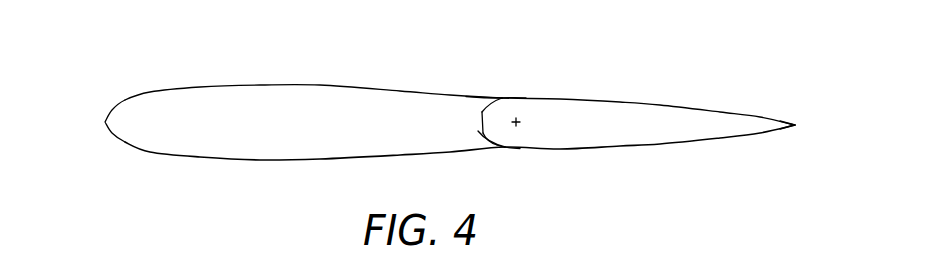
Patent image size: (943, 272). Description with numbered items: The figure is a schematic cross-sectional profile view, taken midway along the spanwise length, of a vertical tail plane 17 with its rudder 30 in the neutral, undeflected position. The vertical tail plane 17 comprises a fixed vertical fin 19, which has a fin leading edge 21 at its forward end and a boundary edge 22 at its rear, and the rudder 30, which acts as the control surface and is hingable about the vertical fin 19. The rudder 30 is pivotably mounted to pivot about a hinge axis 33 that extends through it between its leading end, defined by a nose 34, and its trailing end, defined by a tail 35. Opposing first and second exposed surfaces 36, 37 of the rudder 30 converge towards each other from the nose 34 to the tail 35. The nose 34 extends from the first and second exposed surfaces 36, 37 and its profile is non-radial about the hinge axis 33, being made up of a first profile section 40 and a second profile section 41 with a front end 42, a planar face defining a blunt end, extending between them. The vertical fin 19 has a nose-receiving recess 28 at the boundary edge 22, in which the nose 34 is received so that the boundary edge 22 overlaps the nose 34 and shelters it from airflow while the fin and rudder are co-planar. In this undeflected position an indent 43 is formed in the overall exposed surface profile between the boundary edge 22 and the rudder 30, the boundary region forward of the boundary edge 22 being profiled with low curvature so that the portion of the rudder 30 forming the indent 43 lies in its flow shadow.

The vertical tail plane 17 is at (392, 66).
The vertical fin 19 is at (248, 97).
The fin leading edge 21 is at (103, 123).
The nose-receiving recess 28 is at (472, 102).
The first profile section 40 is at (497, 100).
The indent 43 is at (517, 93).
The nose 34 is at (480, 122).
The front end 42 is at (477, 130).
The second profile section 41 is at (487, 148).
The boundary edge 22 is at (520, 150).
The hinge axis 33 is at (513, 123).
The rudder 30 is at (631, 133).
The first exposed surface 36 is at (687, 105).
The tail 35 is at (783, 122).
The second exposed surface 37 is at (705, 140).